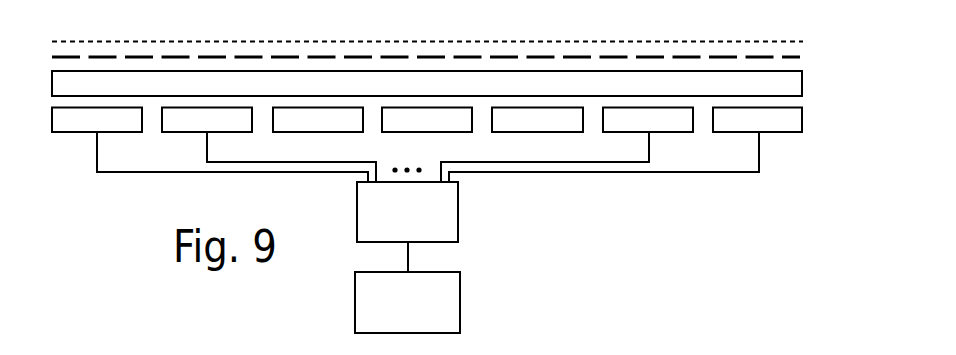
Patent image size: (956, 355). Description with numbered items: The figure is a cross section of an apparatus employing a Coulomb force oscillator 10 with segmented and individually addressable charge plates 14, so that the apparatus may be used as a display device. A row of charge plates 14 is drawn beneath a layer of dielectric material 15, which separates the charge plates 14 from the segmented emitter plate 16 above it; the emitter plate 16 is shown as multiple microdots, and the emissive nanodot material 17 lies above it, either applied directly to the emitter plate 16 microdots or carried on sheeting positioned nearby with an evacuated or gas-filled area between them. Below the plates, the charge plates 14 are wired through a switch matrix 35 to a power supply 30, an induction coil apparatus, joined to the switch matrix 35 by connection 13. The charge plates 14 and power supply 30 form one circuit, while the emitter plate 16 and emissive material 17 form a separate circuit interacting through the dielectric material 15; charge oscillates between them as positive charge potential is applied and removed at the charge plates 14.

The Coulomb force oscillator 10 is at (797, 38).
The power connection 13 is at (408, 257).
The charge plates 14 is at (802, 119).
The dielectric material 15 is at (802, 83).
The emitter plate 16 is at (800, 59).
The emissive nanodot material 17 is at (759, 42).
The power supply 30 is at (460, 293).
The switch matrix 35 is at (458, 214).